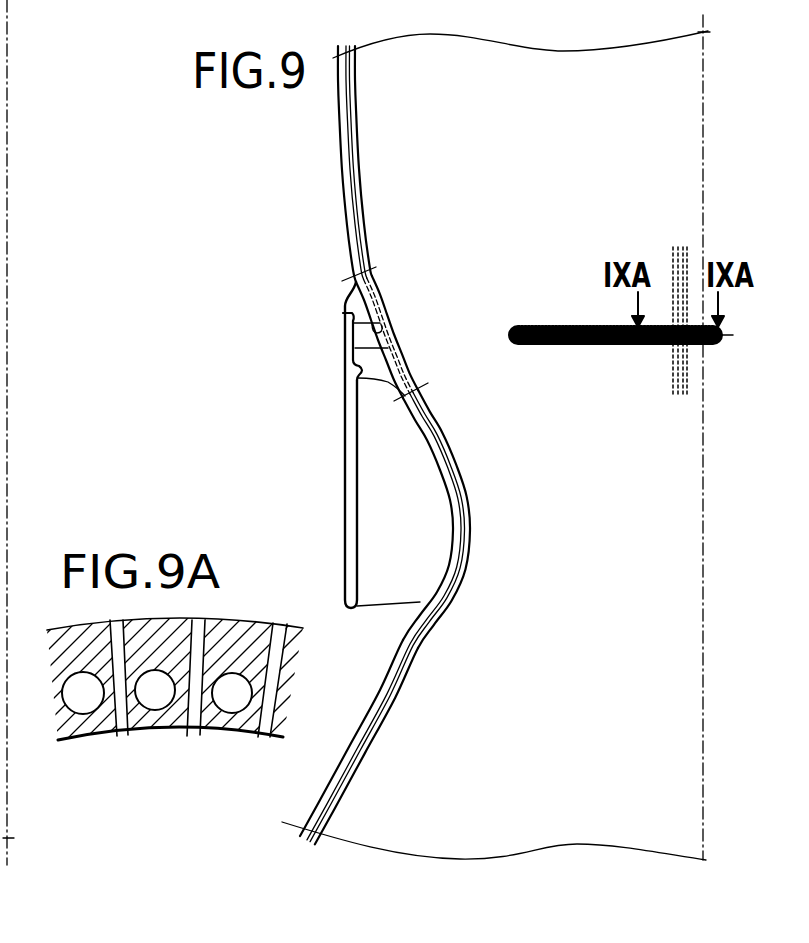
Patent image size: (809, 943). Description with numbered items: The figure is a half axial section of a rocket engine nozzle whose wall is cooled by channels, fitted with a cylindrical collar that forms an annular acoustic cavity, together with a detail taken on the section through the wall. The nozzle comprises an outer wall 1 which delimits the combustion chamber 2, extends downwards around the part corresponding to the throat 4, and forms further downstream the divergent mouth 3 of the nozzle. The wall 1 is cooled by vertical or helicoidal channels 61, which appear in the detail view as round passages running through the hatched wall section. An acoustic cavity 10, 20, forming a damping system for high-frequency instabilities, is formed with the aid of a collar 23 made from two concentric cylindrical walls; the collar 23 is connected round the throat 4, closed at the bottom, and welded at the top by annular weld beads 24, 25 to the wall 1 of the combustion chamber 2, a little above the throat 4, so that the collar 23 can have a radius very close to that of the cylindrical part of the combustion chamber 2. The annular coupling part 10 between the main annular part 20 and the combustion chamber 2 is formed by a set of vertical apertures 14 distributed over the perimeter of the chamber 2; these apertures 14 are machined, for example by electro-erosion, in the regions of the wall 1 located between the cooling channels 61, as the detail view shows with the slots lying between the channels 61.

In FIG. 9, the outer wall 1 is at (398, 445).
In FIG. 9A, the outer wall 1 is at (220, 690).
In FIG. 9, the combustion chamber 2 is at (559, 142).
In FIG. 9, the divergent mouth 3 is at (331, 768).
In FIG. 9A, the divergent mouth 3 is at (330, 770).
In FIG. 9, the throat 4 is at (468, 534).
In FIG. 9, the annular coupling part 10 is at (375, 330).
In FIG. 9, the vertical apertures 14 is at (552, 348).
In FIG. 9A, the vertical apertures 14 is at (123, 720).
In FIG. 9, the main annular part 20 is at (352, 557).
In FIG. 9, the collar 23 is at (346, 500).
In FIG. 9, the annular weld bead 24 is at (346, 320).
In FIG. 9, the annular weld bead 25 is at (362, 380).
In FIG. 9, the cooling channels 61 is at (357, 223).
In FIG. 9A, the cooling channels 61 is at (87, 703).